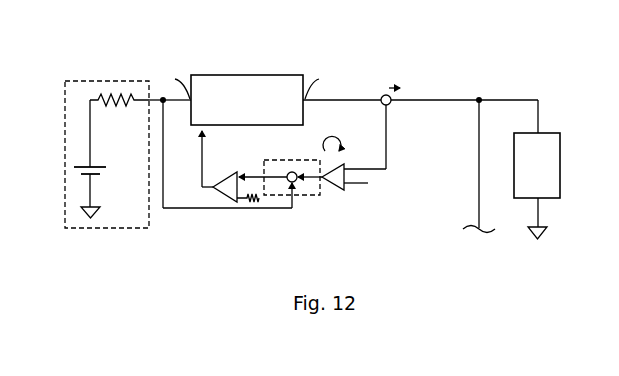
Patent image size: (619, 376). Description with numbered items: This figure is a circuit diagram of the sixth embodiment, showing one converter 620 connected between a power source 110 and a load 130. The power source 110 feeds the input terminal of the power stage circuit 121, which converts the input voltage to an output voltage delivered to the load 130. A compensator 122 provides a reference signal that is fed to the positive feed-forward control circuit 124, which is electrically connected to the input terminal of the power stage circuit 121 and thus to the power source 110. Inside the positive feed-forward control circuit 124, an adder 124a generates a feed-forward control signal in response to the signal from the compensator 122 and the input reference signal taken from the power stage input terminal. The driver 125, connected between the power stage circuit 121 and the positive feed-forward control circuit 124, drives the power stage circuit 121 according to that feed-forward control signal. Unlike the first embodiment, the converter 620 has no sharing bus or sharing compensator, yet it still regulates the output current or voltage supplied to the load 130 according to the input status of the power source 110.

The converter 620 is at (357, 60).
The power source 110 is at (92, 81).
The power stage circuit 121 is at (252, 75).
The compensator 122 is at (337, 190).
The positive feed-forward control circuit 124 is at (288, 177).
The adder 124a is at (289, 172).
The driver 125 is at (224, 198).
The load 130 is at (550, 133).